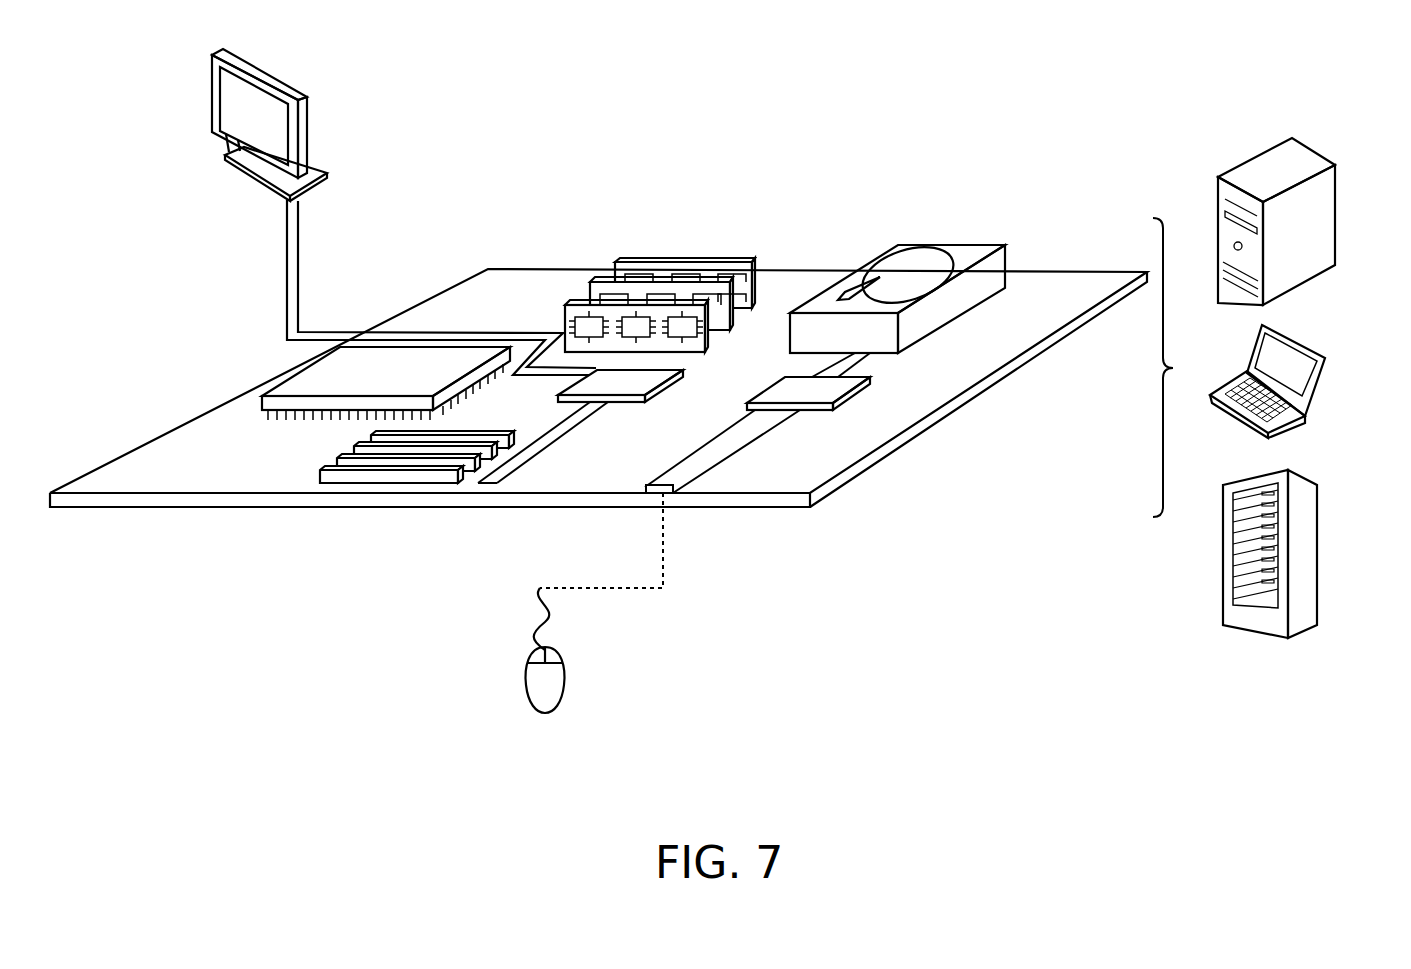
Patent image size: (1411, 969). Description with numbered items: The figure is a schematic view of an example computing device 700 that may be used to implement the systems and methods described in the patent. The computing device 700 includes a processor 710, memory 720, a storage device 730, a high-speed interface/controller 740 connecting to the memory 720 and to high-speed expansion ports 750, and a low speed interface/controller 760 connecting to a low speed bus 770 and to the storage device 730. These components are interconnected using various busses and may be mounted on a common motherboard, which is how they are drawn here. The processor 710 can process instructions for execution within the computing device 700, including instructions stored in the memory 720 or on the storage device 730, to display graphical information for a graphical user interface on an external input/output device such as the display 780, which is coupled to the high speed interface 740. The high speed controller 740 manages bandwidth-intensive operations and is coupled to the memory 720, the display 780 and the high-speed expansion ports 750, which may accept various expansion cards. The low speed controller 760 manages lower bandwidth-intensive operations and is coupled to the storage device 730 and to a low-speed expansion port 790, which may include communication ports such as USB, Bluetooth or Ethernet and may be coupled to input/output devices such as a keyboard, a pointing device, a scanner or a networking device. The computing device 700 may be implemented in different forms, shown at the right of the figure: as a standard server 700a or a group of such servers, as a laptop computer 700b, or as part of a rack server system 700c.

The computing device 700 is at (764, 117).
The standard server 700a is at (1248, 158).
The laptop computer 700b is at (1305, 344).
The rack server system 700c is at (1312, 535).
The processor 710 is at (262, 397).
The memory 720 is at (682, 262).
The storage device 730 is at (947, 244).
The high-speed interface/controller 740 is at (628, 403).
The high-speed expansion ports 750 is at (320, 473).
The low speed interface/controller 760 is at (796, 379).
The low speed bus 770 is at (753, 442).
The display 780 is at (212, 100).
The low-speed expansion port 790 is at (680, 497).